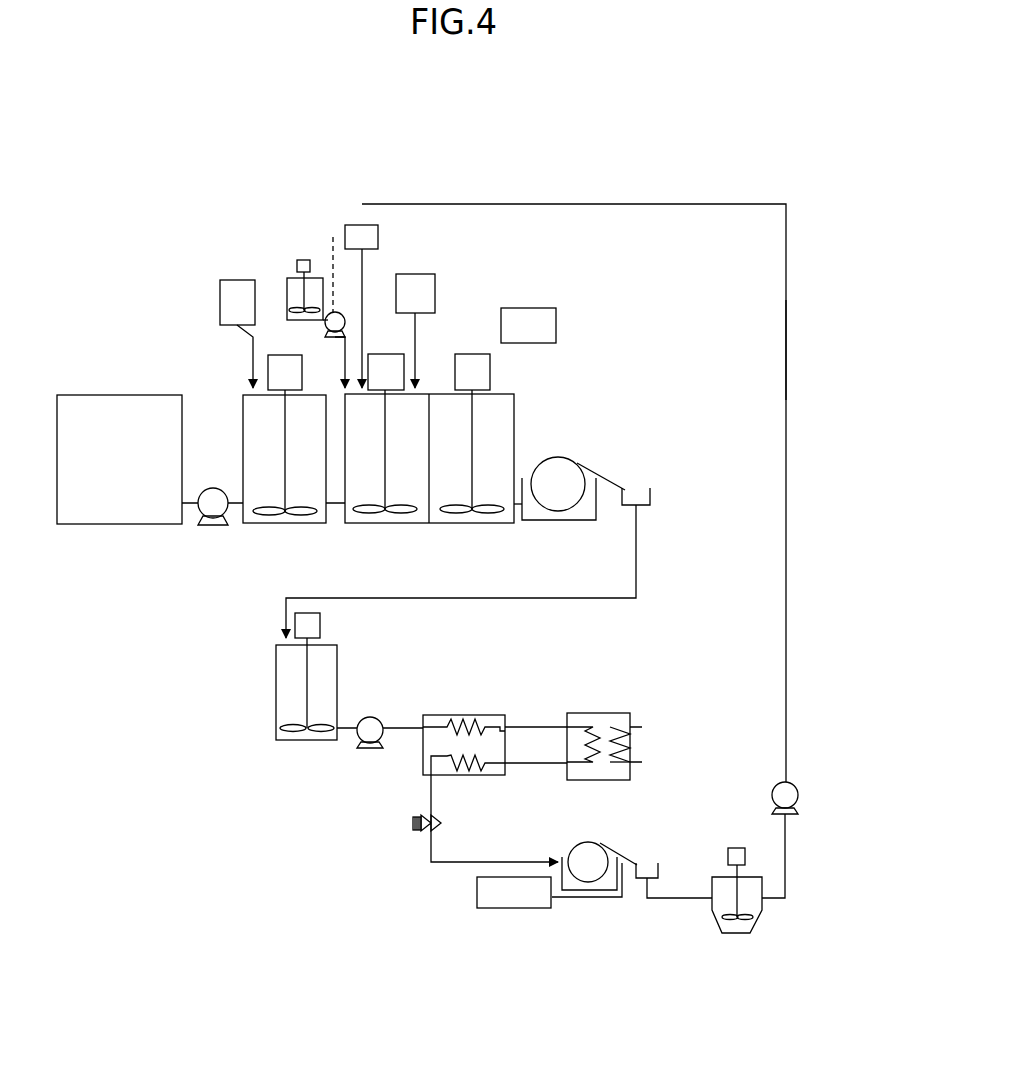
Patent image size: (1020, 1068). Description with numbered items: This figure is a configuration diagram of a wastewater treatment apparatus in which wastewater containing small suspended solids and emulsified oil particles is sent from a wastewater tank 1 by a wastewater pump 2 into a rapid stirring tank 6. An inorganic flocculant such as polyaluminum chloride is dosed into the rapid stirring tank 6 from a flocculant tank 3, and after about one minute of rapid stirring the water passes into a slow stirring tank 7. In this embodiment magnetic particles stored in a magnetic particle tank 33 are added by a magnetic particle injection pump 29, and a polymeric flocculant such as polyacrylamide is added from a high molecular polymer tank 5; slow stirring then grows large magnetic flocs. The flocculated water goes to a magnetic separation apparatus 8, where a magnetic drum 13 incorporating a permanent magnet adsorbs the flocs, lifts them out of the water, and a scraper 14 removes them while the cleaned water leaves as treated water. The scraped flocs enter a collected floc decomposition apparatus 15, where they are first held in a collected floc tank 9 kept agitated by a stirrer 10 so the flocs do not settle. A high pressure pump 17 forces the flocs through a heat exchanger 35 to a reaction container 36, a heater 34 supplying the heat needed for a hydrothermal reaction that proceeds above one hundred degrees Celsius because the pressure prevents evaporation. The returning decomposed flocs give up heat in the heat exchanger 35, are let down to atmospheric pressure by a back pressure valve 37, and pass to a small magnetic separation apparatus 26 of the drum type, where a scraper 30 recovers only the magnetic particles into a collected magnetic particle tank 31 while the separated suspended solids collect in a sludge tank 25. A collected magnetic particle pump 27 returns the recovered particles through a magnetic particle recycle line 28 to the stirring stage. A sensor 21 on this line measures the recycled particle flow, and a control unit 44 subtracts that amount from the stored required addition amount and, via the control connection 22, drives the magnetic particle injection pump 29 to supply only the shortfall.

The wastewater tank 1 is at (78, 405).
The wastewater pump 2 is at (207, 510).
The flocculant tank 3 is at (226, 297).
The high molecular polymer tank 5 is at (428, 288).
The rapid stirring tank 6 is at (313, 502).
The slow stirring tank 7 is at (415, 500).
The magnetic separation apparatus 8 is at (553, 445).
The collected floc tank 9 is at (285, 688).
The stirrer 10 is at (338, 644).
The magnetic drum 13 is at (565, 467).
The scraper 14 is at (617, 478).
The collected floc decomposition apparatus 15 is at (342, 850).
The high pressure pump 17 is at (358, 743).
The sensor 21 is at (355, 232).
The control line 22 is at (333, 256).
The sludge tank 25 is at (517, 898).
The small magnetic separation apparatus 26 is at (583, 852).
The collected magnetic particle pump 27 is at (797, 812).
The magnetic particle recycle line 28 is at (786, 360).
The magnetic particle injection pump 29 is at (343, 318).
The scraper 30 is at (640, 858).
The collected magnetic particle tank 31 is at (737, 930).
The magnetic particle tank 33 is at (292, 285).
The heater 34 is at (630, 740).
The heat exchanger 35 is at (473, 720).
The reaction container 36 is at (613, 772).
The back pressure valve 37 is at (437, 822).
The control unit 44 is at (557, 323).